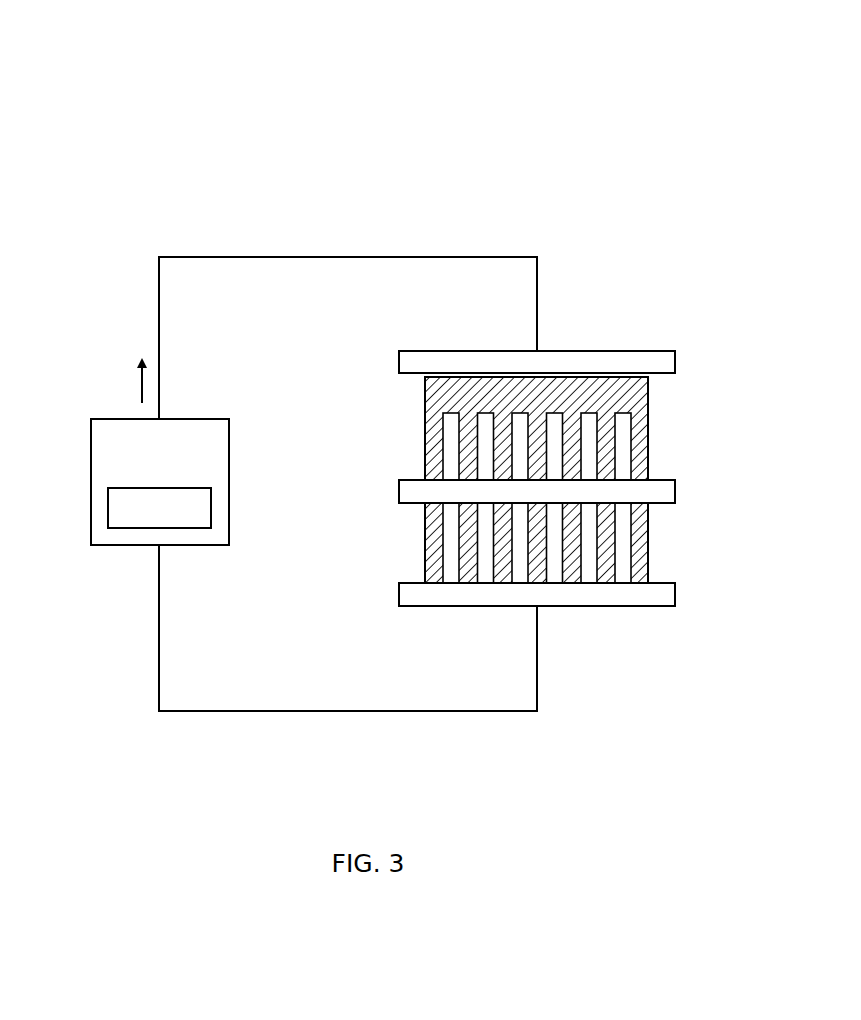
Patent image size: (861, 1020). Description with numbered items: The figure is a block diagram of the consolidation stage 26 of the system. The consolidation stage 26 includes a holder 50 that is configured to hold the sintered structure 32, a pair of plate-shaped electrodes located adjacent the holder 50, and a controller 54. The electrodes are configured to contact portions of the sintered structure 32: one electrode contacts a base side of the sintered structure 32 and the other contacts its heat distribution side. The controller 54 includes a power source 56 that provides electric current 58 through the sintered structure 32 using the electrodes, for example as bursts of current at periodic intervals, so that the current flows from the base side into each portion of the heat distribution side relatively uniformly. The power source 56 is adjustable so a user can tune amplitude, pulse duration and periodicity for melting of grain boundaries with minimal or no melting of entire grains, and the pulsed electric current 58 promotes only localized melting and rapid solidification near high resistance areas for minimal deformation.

The consolidation stage 26 is at (68, 78).
The sintered structure 32 is at (648, 420).
The holder 50 is at (675, 501).
The controller 54 is at (160, 482).
The power source 56 is at (159, 508).
The electric current 58 is at (124, 381).